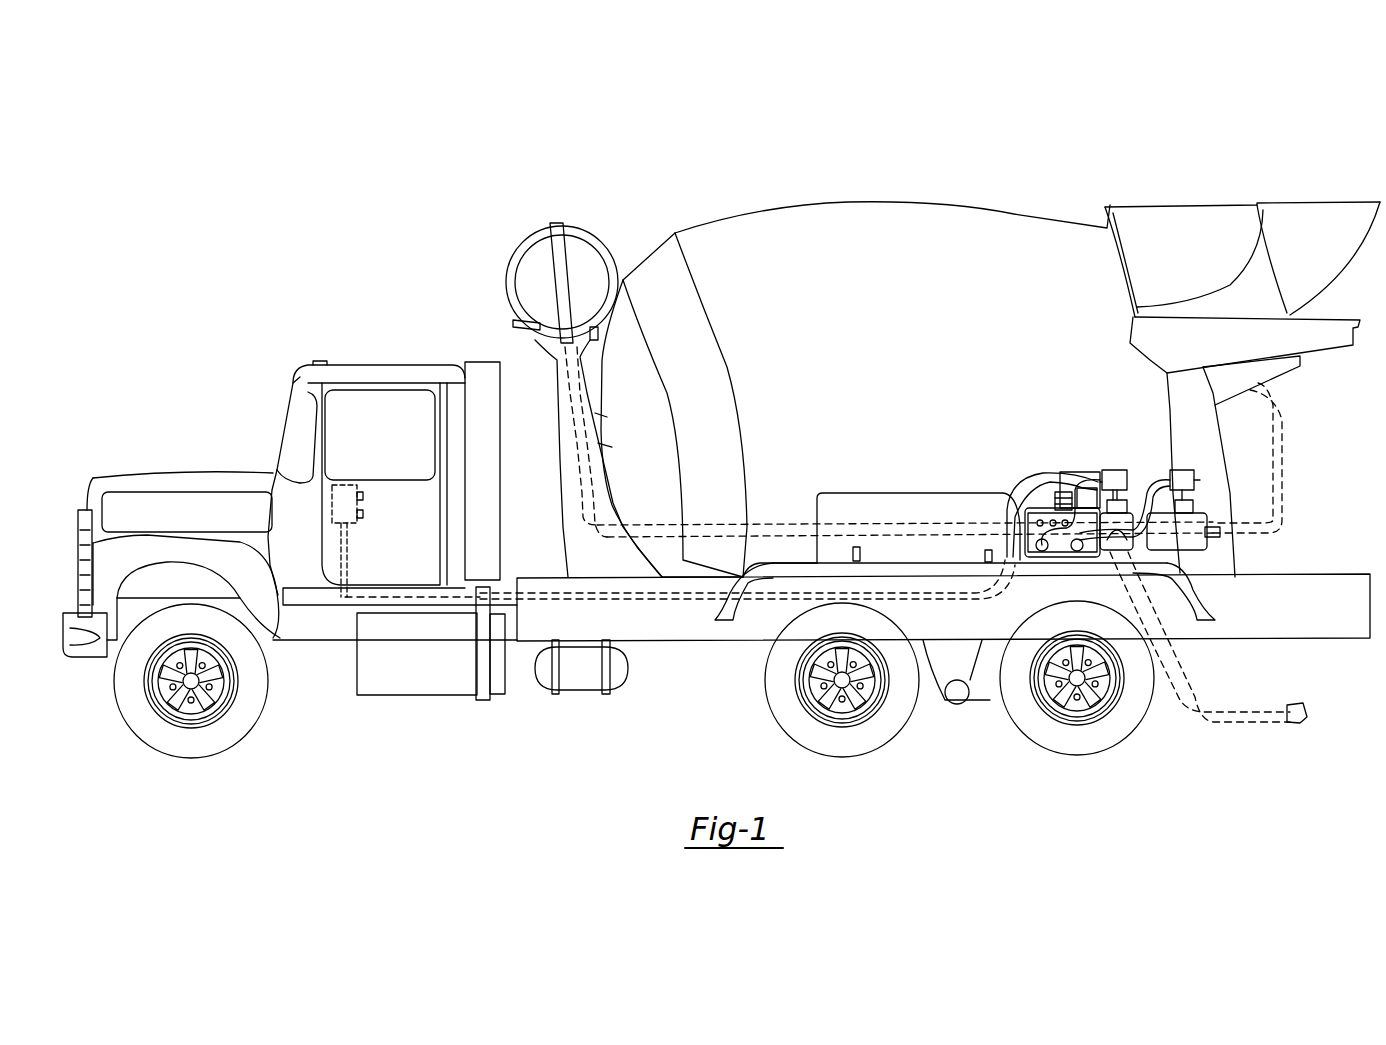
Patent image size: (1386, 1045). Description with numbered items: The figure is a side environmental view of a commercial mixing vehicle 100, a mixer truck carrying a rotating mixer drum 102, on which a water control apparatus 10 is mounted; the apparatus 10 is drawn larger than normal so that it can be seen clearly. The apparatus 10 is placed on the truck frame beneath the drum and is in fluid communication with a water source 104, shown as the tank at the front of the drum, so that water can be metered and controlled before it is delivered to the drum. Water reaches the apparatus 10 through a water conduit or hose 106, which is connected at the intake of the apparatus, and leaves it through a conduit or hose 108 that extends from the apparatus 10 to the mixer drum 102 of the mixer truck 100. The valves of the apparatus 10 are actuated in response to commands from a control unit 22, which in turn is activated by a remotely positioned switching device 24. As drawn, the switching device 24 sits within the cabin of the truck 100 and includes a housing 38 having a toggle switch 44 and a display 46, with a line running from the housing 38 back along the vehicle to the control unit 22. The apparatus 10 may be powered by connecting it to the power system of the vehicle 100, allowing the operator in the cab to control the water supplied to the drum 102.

The water control apparatus 10 is at (1089, 479).
The control unit 22 is at (1040, 512).
The switching device 24 is at (343, 488).
The housing 38 is at (332, 513).
The toggle switch 44 is at (363, 498).
The display 46 is at (370, 517).
The commercial mixing vehicle 100 is at (513, 710).
The mixer drum 102 is at (792, 237).
The water source 104 is at (580, 250).
The hose 106 is at (1197, 717).
The hose 108 is at (1285, 493).